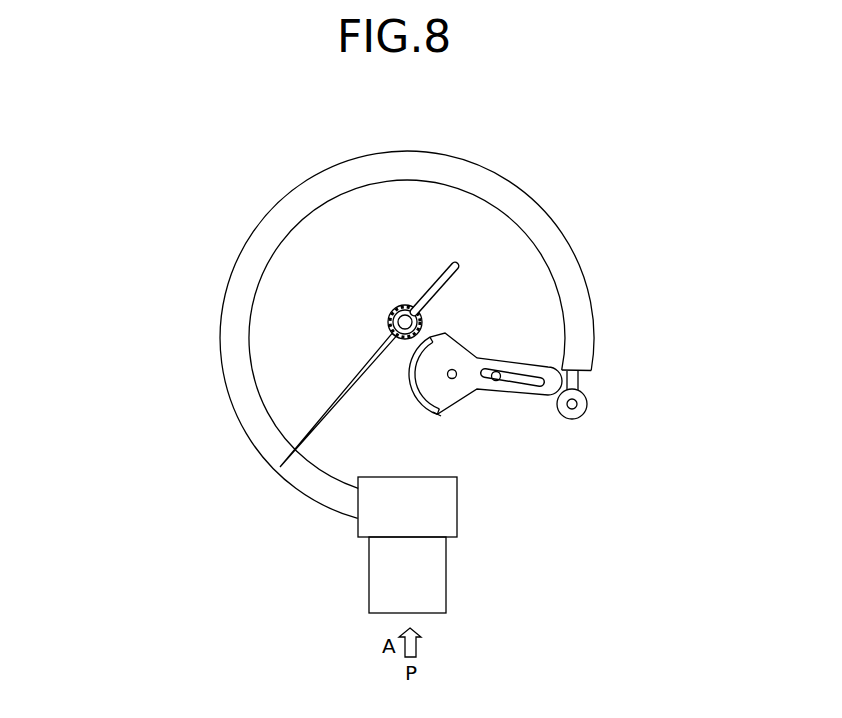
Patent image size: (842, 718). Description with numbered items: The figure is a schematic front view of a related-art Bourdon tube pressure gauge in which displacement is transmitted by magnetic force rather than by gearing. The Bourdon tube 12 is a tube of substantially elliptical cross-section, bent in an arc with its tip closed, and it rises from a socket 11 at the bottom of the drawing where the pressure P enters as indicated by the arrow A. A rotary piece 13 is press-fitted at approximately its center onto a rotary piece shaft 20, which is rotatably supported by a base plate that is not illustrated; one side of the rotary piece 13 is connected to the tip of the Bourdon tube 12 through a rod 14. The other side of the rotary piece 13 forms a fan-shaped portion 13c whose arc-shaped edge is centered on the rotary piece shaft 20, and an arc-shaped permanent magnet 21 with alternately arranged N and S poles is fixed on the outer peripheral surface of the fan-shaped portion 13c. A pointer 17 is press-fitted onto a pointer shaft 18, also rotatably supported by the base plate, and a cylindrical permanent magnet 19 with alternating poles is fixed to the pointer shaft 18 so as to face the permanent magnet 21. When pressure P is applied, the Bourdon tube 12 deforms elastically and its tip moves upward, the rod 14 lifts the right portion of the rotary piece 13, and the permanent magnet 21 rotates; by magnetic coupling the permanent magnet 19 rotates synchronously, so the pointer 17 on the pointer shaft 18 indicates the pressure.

The pressure inlet socket 11 is at (402, 582).
The Bourdon tube 12 is at (569, 271).
The rotary piece 13 is at (522, 353).
The fan-shaped portion 13c is at (463, 402).
The rod 14 is at (547, 407).
The pointer 17 is at (305, 413).
The pointer shaft 18 is at (396, 314).
The cylindrical permanent magnet 19 is at (258, 271).
The rotary piece shaft 20 is at (456, 369).
The arc-shaped permanent magnet 21 is at (433, 413).